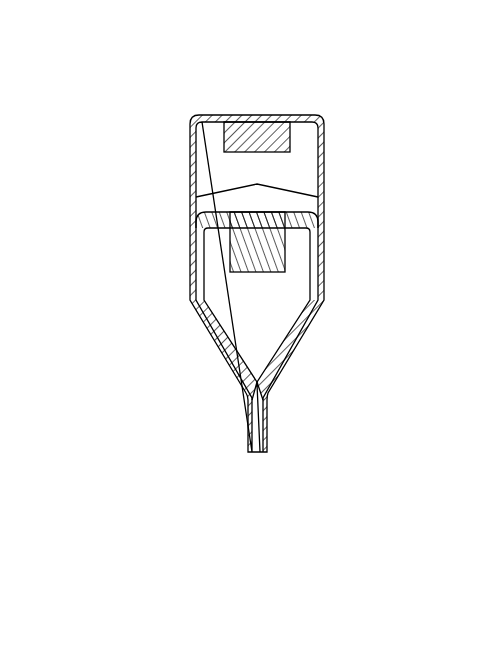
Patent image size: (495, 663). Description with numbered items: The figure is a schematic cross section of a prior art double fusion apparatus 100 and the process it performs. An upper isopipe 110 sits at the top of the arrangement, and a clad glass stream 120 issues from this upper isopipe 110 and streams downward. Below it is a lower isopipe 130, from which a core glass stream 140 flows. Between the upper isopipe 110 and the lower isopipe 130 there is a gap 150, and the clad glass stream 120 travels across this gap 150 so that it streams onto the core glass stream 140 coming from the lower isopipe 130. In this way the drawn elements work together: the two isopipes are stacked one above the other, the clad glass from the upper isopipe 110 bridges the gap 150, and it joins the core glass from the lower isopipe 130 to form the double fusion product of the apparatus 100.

The double fusion apparatus 100 is at (368, 116).
The upper isopipe 110 is at (307, 170).
The clad glass stream 120 is at (253, 125).
The lower isopipe 130 is at (300, 273).
The core glass stream 140 is at (282, 214).
The gap 150 is at (178, 197).